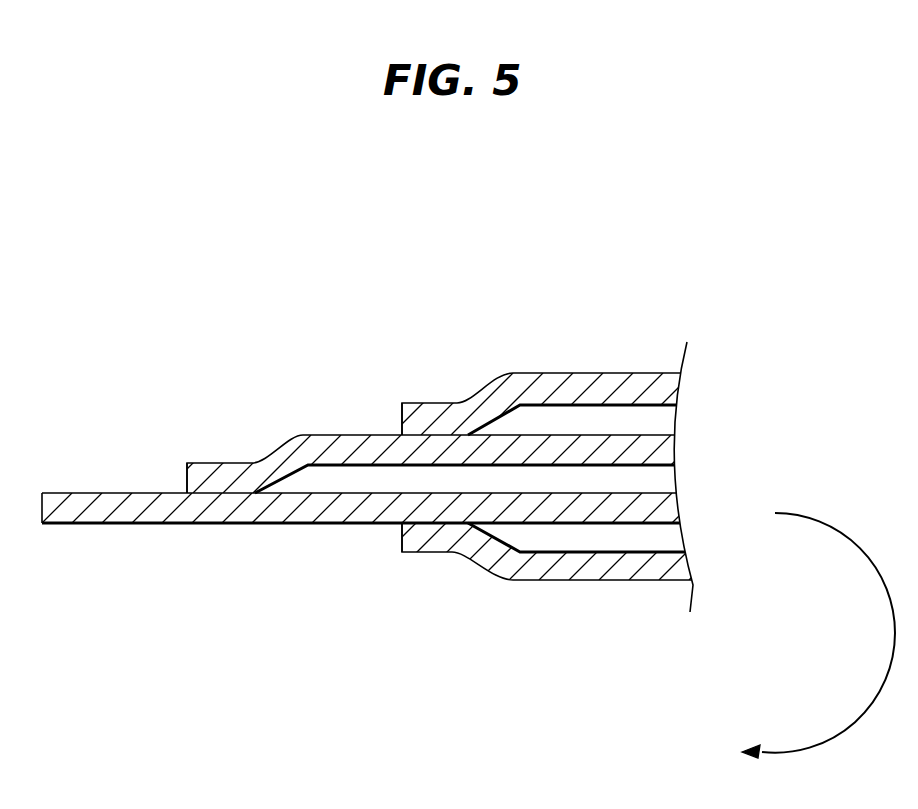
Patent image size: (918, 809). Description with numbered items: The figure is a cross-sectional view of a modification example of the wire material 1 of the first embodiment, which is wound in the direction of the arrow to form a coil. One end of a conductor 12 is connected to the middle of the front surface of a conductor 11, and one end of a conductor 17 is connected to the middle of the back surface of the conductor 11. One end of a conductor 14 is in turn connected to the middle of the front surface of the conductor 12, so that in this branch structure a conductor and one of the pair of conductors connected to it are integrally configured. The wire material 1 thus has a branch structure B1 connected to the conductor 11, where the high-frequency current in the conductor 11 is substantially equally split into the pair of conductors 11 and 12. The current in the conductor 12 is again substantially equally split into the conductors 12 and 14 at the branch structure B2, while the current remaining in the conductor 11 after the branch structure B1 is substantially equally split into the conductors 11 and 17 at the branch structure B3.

The wire material 1 is at (481, 181).
The conductor 11 is at (102, 512).
The conductor 12 is at (229, 475).
The conductor 14 is at (603, 385).
The conductor 17 is at (620, 568).
The branch structure B1 is at (190, 448).
The branch structure B2 is at (438, 391).
The branch structure B3 is at (423, 565).